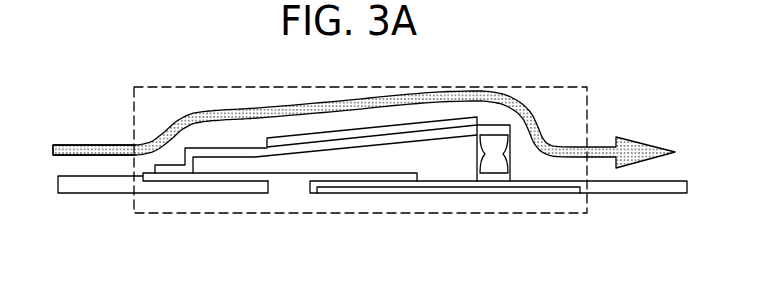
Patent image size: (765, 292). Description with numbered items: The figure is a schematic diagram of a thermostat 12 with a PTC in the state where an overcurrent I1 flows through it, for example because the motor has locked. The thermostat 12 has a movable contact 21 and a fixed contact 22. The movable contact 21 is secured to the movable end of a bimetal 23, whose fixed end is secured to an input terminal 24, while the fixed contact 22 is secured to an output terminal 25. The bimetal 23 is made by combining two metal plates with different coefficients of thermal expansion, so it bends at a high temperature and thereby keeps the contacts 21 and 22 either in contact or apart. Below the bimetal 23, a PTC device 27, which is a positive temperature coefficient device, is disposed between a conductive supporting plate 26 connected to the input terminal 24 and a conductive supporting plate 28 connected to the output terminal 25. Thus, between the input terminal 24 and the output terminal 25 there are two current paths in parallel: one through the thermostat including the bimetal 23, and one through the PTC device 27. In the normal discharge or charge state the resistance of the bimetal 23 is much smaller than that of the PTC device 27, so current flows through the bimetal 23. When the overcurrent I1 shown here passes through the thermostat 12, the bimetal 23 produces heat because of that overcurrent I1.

The overcurrent I1 is at (99, 144).
The thermostat with a PTC 12 is at (180, 86).
The movable contact 21 is at (522, 105).
The fixed contact 22 is at (505, 164).
The bimetal 23 is at (440, 133).
The input terminal 24 is at (92, 188).
The output terminal 25 is at (623, 187).
The conductive supporting plate 26 is at (282, 175).
The PTC device 27 is at (329, 184).
The conductive supporting plate 28 is at (468, 186).